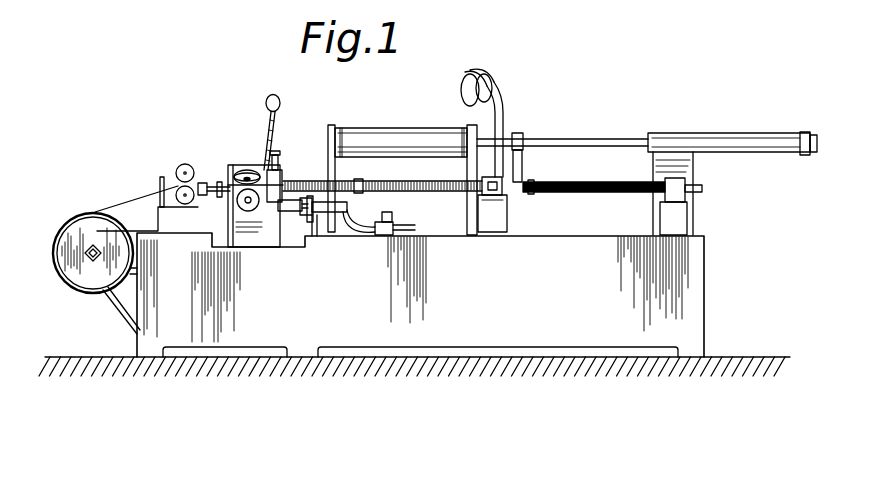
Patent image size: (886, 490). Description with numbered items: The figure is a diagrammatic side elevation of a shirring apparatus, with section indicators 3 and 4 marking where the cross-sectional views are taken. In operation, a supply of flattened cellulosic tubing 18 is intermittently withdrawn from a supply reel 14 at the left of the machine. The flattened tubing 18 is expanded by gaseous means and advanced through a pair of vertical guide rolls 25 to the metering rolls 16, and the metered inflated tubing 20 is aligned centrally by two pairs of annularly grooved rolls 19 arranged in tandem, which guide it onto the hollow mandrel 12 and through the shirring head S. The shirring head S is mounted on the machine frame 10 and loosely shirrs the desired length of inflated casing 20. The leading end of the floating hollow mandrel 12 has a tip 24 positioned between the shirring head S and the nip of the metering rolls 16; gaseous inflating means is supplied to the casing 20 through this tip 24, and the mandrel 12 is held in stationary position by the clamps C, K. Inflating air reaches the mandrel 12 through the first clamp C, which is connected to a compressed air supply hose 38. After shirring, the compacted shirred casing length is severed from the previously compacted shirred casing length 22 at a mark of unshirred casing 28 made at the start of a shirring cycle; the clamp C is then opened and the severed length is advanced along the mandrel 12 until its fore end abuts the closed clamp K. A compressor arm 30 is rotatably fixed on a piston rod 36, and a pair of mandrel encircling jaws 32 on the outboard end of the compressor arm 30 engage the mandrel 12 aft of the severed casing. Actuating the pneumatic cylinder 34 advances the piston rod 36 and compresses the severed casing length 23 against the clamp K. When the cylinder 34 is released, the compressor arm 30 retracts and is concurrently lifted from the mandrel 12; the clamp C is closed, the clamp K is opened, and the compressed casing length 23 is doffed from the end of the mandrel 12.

The machine frame 10 is at (705, 279).
The hollow mandrel 12 is at (508, 200).
The supply reel 14 is at (57, 264).
The metering rolls 16 is at (177, 174).
The cellulosic tubing 18 is at (95, 211).
The annularly grooved rolls 19 is at (207, 200).
The inflated tubing 20 is at (222, 197).
The compacted shirred casing length 22 is at (312, 181).
The compressed casing length 23 is at (625, 182).
The tip 24 is at (183, 165).
The vertical guide rolls 25 is at (160, 189).
The mark of unshirred casing 28 is at (365, 179).
The compressor arm 30 is at (523, 167).
The mandrel encircling jaws 32 is at (531, 193).
The pneumatic cylinder 34 is at (425, 138).
The piston rod 36 is at (595, 138).
The compressed air supply hose 38 is at (495, 82).
The shirring head S is at (240, 163).
The first clamp C is at (504, 178).
The clamp K is at (675, 170).
The section line 3 is at (257, 132).
The section line 4 is at (322, 92).